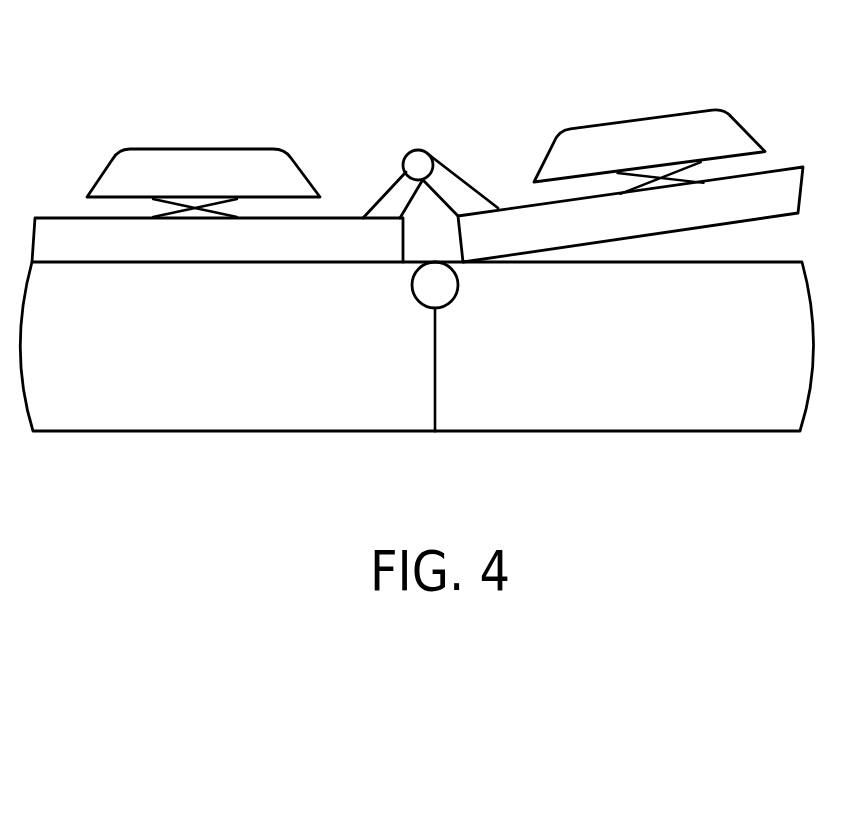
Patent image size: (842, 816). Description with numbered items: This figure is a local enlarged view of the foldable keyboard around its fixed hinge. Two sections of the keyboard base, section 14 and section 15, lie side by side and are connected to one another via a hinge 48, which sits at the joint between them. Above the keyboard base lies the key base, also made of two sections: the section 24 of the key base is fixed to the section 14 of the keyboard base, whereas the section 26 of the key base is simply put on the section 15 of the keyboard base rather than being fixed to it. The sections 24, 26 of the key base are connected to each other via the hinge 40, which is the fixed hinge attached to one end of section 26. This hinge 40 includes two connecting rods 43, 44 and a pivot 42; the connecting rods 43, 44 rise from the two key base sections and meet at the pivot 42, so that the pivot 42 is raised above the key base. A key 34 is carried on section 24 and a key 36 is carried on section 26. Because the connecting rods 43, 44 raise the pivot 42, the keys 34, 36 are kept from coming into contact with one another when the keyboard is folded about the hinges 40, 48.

The section of the keyboard base 14 is at (228, 405).
The section of the keyboard base 15 is at (626, 403).
The section of the key base 24 is at (172, 248).
The section of the key base 26 is at (678, 222).
The key 34 is at (208, 170).
The key 36 is at (650, 137).
The fixed hinge 40 is at (418, 113).
The pivot 42 is at (411, 126).
The connecting rod 43 is at (383, 203).
The connecting rod 44 is at (465, 202).
The hinge 48 is at (445, 292).